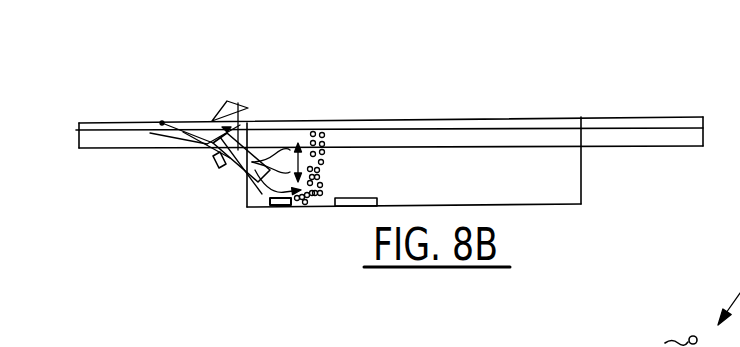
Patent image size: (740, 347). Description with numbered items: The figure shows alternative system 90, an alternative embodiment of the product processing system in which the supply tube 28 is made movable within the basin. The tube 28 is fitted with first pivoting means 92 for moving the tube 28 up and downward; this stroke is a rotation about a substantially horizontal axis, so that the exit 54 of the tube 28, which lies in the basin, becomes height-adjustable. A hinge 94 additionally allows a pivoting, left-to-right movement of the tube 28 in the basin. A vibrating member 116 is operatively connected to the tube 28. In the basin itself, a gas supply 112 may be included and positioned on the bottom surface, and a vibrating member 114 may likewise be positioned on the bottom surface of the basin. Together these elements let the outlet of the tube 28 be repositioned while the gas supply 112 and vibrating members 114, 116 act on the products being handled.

The alternative system 90 is at (240, 62).
The hinge 94 is at (196, 98).
The first pivoting means 92 is at (207, 145).
The vibrating member 116 is at (212, 168).
The supply tube 28 is at (232, 172).
The exit 54 is at (223, 218).
The gas supply 112 is at (275, 218).
The vibrating member 114 is at (349, 222).